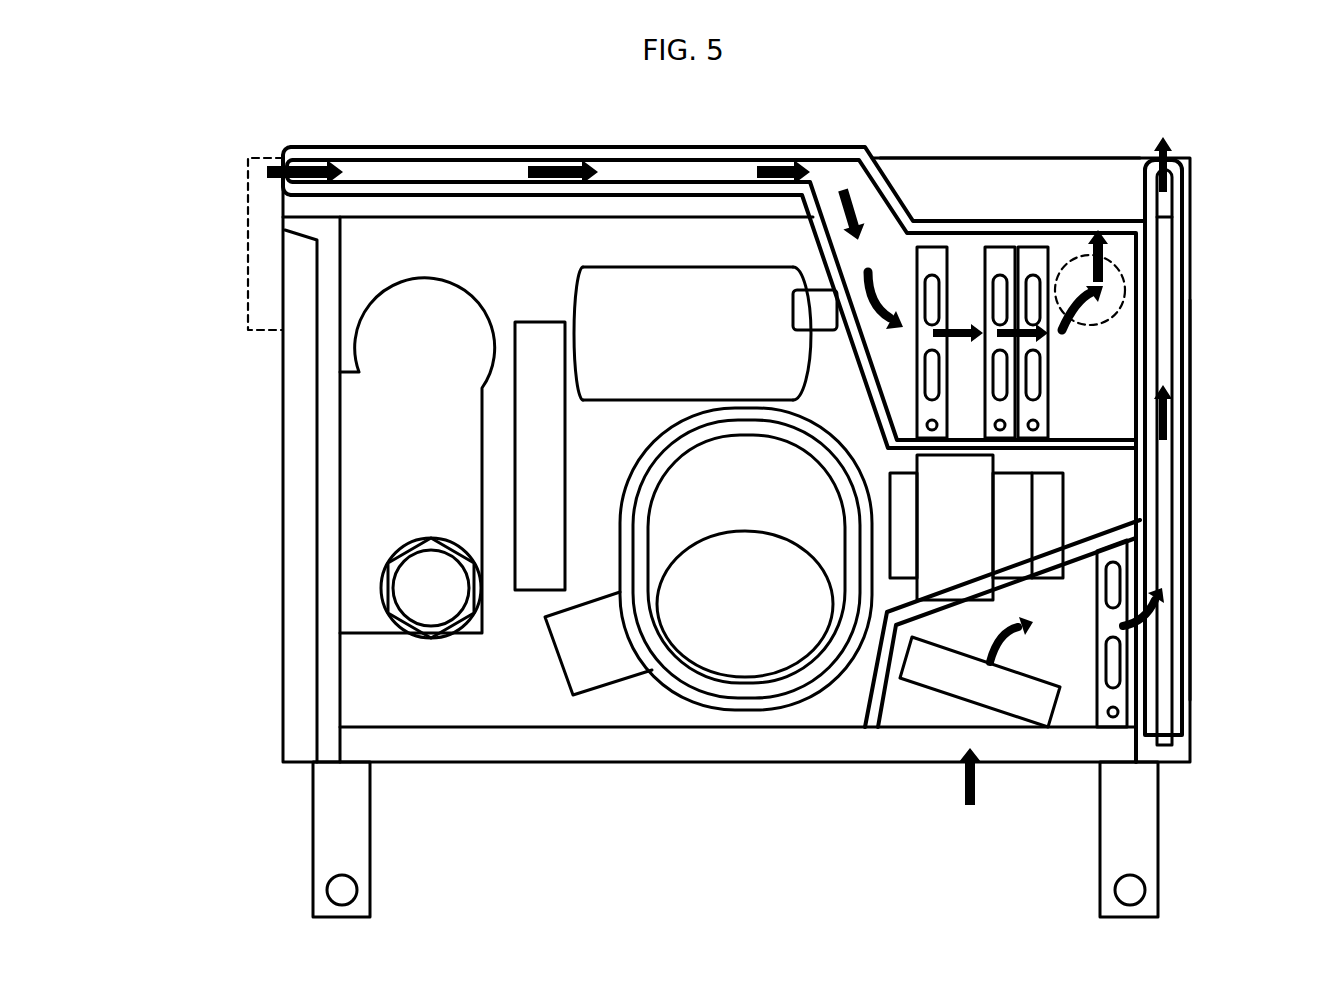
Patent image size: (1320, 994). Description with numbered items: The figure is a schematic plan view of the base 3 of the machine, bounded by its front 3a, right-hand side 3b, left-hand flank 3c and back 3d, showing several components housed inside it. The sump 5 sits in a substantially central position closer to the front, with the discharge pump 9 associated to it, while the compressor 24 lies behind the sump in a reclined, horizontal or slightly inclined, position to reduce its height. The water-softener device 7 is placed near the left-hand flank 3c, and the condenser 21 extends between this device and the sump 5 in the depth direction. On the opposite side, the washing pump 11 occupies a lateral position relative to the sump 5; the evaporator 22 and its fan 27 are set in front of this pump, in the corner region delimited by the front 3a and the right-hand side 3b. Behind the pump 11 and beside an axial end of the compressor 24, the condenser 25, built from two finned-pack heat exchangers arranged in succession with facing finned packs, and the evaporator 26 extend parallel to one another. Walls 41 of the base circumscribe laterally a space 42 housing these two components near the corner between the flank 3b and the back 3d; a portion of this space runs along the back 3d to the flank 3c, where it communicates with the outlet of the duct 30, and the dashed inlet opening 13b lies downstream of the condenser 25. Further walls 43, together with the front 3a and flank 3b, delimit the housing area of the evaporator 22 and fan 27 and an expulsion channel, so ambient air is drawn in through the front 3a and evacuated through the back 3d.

The base 3 is at (1233, 209).
The front 3a is at (1033, 750).
The right-hand side 3b is at (1190, 592).
The left-hand flank 3c is at (283, 697).
The back 3d is at (993, 158).
The sump 5 is at (684, 698).
The water-softener device 7 is at (436, 302).
The discharge pump 9 is at (570, 655).
The washing pump 11 is at (1037, 507).
The inlet opening 13b is at (1130, 363).
The condenser 21 is at (541, 330).
The evaporator 22 is at (1120, 695).
The compressor 24 is at (670, 282).
The condenser 25 is at (1003, 417).
The evaporator 26 is at (933, 260).
The fan 27 is at (917, 690).
The duct 30 is at (247, 276).
The walls 41 is at (455, 190).
The space 42 is at (903, 263).
The walls 43 is at (1120, 532).